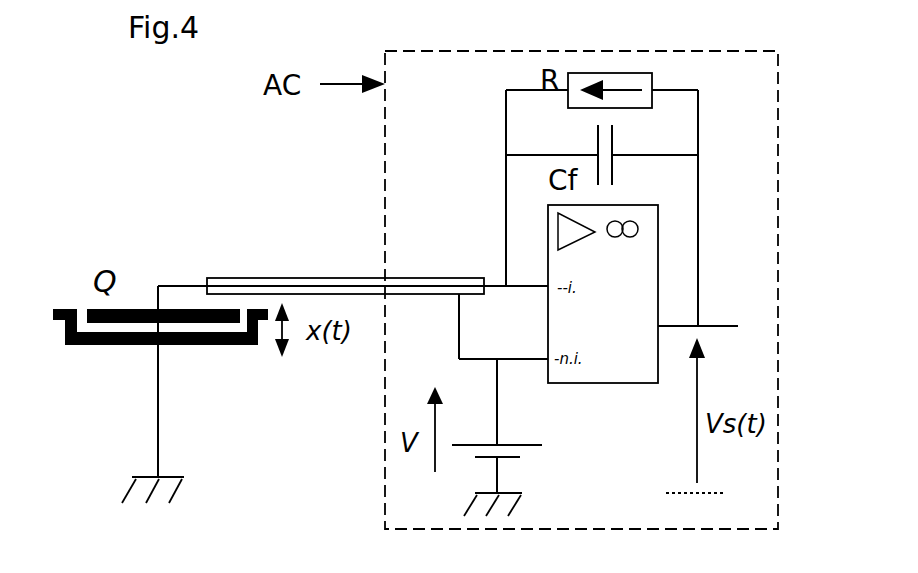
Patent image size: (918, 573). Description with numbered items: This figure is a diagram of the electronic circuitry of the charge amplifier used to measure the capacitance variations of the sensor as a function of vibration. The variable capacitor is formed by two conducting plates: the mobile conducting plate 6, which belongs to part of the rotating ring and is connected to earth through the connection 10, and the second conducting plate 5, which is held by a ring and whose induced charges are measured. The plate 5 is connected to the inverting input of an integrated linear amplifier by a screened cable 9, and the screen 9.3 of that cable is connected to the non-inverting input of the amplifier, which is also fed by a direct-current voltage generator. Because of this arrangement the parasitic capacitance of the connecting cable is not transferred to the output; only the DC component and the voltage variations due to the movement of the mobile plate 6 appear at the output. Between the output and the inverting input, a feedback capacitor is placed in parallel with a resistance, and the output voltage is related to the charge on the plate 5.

The second conducting plate 5 is at (140, 287).
The mobile conducting plate 6 is at (127, 367).
The screened cable 9 is at (190, 270).
The screen of the screened cable 9.3 is at (357, 260).
The connection 10 is at (176, 407).